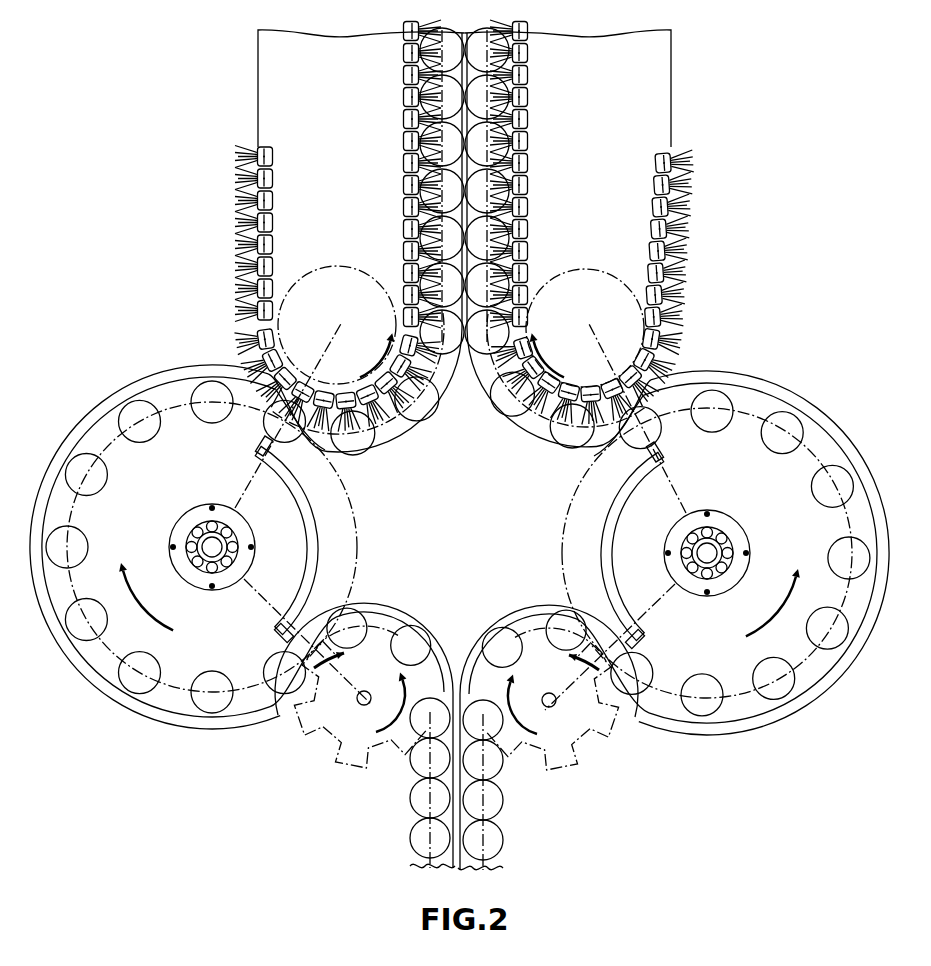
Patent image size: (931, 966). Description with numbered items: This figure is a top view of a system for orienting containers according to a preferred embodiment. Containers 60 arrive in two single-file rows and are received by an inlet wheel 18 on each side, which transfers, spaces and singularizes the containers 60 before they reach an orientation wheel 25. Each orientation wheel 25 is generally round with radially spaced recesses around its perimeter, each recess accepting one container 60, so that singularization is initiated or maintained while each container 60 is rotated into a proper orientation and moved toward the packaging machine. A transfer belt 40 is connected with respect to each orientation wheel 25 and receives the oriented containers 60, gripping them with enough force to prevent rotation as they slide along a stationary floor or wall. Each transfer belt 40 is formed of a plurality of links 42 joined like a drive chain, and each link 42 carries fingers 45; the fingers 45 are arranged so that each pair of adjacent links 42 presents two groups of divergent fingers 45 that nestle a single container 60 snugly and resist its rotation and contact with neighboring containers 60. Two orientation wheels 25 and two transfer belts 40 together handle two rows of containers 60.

The transfer belt 40 is at (259, 101).
The link 42 is at (263, 148).
The finger 45 is at (243, 216).
The container 60 is at (146, 410).
The orientation wheel 25 is at (184, 445).
The inlet wheel 18 is at (392, 645).